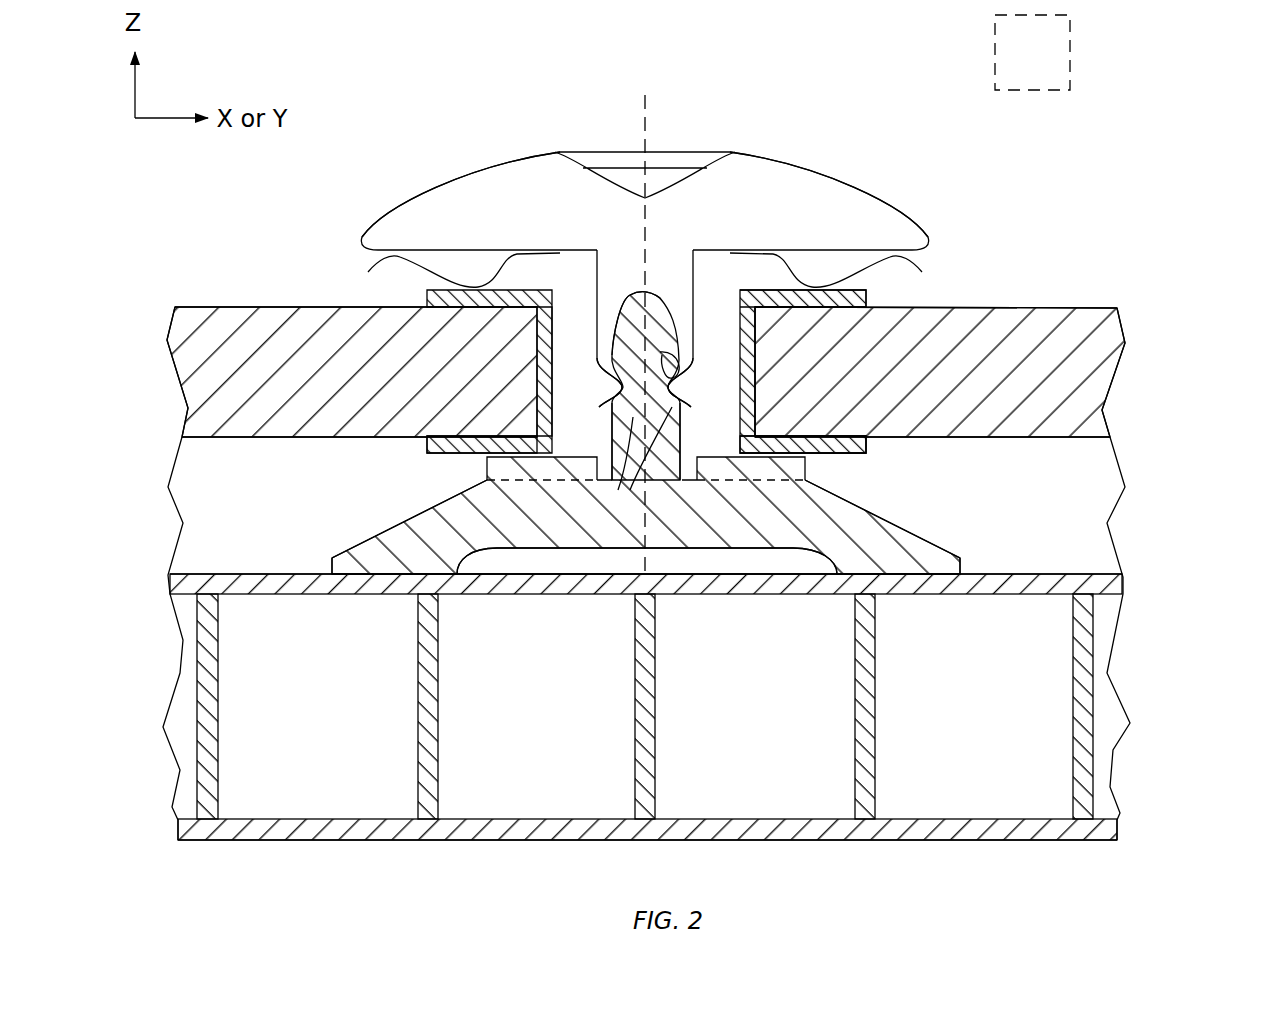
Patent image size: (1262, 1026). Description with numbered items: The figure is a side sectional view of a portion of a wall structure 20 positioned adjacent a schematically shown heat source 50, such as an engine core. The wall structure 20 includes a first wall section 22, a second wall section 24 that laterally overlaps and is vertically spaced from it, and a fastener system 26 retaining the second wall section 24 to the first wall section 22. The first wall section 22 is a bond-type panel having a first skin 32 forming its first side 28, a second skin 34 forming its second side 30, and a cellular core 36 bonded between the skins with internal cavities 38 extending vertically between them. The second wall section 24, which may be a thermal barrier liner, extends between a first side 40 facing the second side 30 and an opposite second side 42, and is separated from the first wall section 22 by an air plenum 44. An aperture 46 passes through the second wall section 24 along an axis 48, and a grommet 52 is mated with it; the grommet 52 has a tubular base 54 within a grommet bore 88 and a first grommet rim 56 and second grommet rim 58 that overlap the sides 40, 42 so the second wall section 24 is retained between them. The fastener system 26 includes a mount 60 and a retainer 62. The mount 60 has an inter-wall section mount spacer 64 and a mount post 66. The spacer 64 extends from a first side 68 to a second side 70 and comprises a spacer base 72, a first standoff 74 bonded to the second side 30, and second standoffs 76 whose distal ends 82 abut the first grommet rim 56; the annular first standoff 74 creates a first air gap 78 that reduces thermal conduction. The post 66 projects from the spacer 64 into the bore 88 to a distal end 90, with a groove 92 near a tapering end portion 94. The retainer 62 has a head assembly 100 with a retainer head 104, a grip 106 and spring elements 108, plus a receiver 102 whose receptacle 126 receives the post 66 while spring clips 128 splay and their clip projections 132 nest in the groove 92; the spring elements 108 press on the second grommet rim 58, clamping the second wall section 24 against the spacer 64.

The wall structure 20 is at (1163, 118).
The first wall section 22 is at (1146, 702).
The second wall section 24 is at (1145, 368).
The fastener system 26 is at (851, 152).
The first wall section first side 28 is at (1087, 840).
The first wall section second side 30 is at (1083, 575).
The first skin 32 is at (178, 828).
The second skin 34 is at (172, 585).
The cellular core 36 is at (155, 595).
The internal cavities 38 is at (304, 721).
The second wall section first side 40 is at (1080, 437).
The second wall section second side 42 is at (1088, 306).
The air plenum 44 is at (238, 519).
The aperture 46 is at (533, 392).
The axis 48 is at (677, 574).
The heat source 50 is at (1018, 68).
The grommet 52 is at (758, 380).
The grommet base 54 is at (757, 348).
The first grommet rim 56 is at (845, 450).
The second grommet rim 58 is at (848, 307).
The mount 60 is at (907, 508).
The retainer 62 is at (776, 145).
The inter-wall section mount spacer 64 is at (419, 507).
The mount post 66 is at (685, 436).
The spacer first side 68 is at (392, 575).
The spacer second side 70 is at (587, 478).
The spacer base 72 is at (865, 522).
The spacer first standoff 74 is at (356, 565).
The spacer second standoff 76 is at (487, 464).
The first air gap 78 is at (556, 562).
The distal end of second standoff 82 is at (506, 440).
The grommet bore 88 is at (592, 378).
The distal end of post 90 is at (646, 293).
The groove 92 is at (662, 357).
The end portion of post 94 is at (617, 310).
The retainer head assembly 100 is at (875, 192).
The retainer receiver 102 is at (585, 332).
The retainer head 104 is at (404, 200).
The retainer grip 106 is at (608, 150).
The retainer spring elements 108 is at (418, 268).
The receptacle 126 is at (627, 283).
The spring clips 128 is at (694, 274).
The clip projection 132 is at (634, 465).